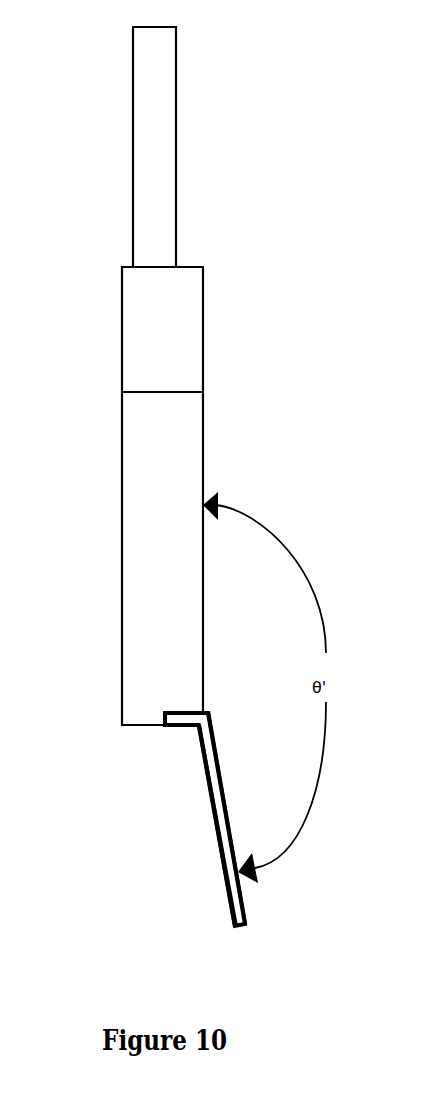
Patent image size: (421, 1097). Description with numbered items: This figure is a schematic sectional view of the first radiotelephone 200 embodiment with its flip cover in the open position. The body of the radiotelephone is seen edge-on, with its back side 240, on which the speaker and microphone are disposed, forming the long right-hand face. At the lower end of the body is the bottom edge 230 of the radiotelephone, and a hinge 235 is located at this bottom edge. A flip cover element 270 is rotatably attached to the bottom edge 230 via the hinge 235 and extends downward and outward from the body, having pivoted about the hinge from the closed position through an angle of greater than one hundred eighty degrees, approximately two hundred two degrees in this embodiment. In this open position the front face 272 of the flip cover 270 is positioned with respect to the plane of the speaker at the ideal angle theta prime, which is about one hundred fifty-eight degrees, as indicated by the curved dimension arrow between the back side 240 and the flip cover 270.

The radiotelephone 200 is at (107, 362).
The back side 240 is at (203, 418).
The bottom edge 230 is at (135, 727).
The hinge 235 is at (176, 729).
The flip cover element 270 is at (226, 903).
The front face 272 is at (245, 912).